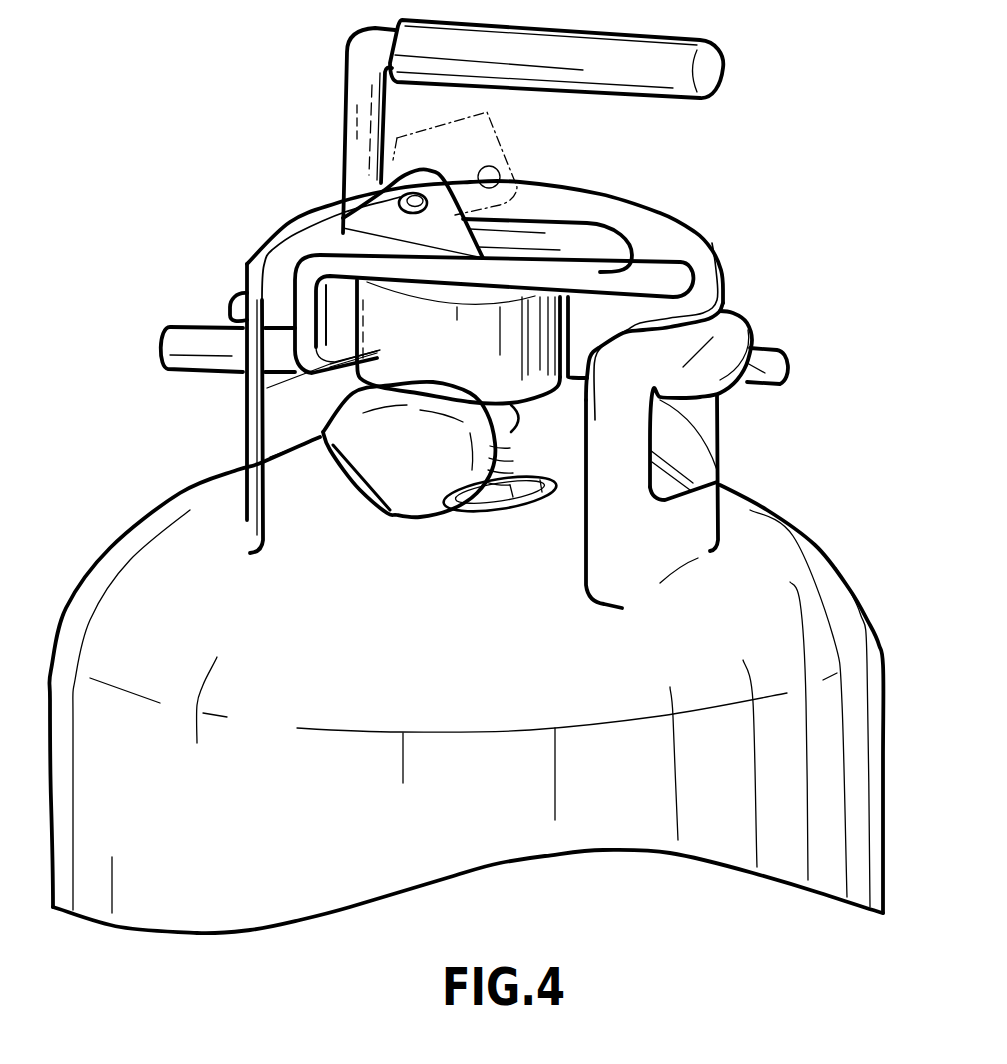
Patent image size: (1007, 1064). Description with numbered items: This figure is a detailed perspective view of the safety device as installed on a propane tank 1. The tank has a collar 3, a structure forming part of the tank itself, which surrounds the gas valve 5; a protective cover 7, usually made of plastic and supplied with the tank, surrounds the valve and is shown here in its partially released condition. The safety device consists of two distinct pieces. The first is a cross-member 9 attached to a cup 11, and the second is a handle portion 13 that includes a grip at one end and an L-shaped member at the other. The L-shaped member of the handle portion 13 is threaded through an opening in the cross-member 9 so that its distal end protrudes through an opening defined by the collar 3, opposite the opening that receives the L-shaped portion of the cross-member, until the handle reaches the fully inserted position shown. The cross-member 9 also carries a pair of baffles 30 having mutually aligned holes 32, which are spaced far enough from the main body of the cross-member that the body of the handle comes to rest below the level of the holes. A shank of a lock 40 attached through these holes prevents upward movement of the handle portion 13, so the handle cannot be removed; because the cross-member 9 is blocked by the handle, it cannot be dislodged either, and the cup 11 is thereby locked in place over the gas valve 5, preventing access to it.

The propane tank 1 is at (767, 556).
The collar 3 is at (712, 323).
The gas valve 5 is at (508, 447).
The protective cover 7 is at (410, 486).
The cross-member 9 is at (668, 270).
The cup 11 is at (360, 380).
The handle portion 13 is at (358, 82).
The baffles 30 is at (273, 236).
The holes 32 is at (341, 229).
The lock 40 is at (510, 142).